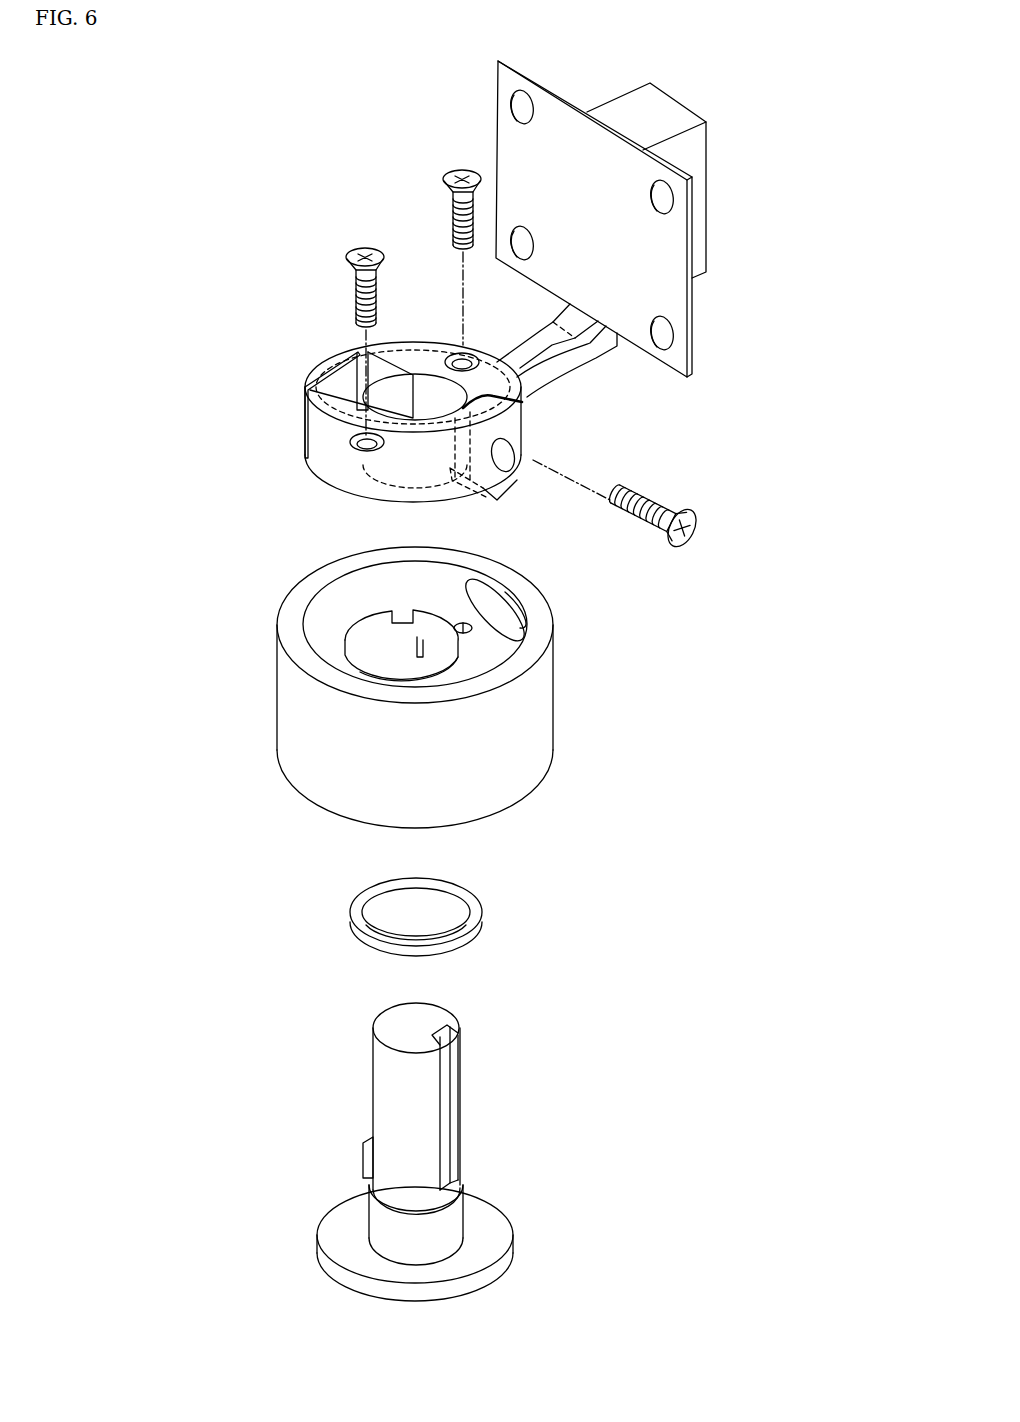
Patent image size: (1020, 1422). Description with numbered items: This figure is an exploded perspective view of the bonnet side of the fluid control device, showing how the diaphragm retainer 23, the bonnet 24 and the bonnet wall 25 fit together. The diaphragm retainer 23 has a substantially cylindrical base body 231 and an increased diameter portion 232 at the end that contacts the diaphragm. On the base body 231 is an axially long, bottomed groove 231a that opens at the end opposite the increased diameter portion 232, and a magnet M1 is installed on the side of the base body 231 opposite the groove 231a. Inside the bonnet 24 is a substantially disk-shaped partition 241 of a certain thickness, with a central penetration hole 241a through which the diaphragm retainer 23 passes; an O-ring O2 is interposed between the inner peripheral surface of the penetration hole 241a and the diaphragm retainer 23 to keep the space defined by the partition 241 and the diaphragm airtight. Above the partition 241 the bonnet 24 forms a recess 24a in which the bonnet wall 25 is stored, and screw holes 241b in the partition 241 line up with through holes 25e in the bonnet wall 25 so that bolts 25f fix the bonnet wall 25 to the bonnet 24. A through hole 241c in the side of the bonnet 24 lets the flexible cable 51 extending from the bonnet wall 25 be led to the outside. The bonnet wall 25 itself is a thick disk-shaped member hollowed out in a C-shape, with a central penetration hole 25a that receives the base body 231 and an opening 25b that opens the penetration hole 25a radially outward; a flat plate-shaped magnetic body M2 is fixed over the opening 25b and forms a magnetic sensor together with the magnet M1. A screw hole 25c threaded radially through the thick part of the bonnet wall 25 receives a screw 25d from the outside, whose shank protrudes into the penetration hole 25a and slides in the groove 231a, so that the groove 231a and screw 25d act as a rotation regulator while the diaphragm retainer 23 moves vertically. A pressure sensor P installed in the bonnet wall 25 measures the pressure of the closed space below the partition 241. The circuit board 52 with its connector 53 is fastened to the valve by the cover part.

The diaphragm retainer 23 is at (422, 1117).
The base body 231 is at (373, 1078).
The groove 231a is at (455, 1033).
The increased diameter portion 232 is at (513, 1240).
The magnet M1 is at (363, 1160).
The bonnet 24 is at (443, 685).
The recess 24a is at (415, 604).
The partition 241 is at (555, 665).
The penetration hole 241a is at (380, 673).
The screw hole 241b is at (463, 630).
The through hole 241c is at (493, 650).
The O-ring O2 is at (482, 930).
The bonnet wall 25 is at (320, 472).
The penetration hole 25a is at (522, 402).
The opening 25b is at (362, 382).
The screw hole 25c is at (517, 462).
The screw 25d is at (697, 530).
The through hole 25e is at (457, 367).
The bolt 25f is at (460, 168).
The magnetic body M2 is at (303, 413).
The pressure sensor P is at (503, 497).
The flexible cable 51 is at (538, 330).
The circuit board 52 is at (692, 330).
The connector 53 is at (707, 240).